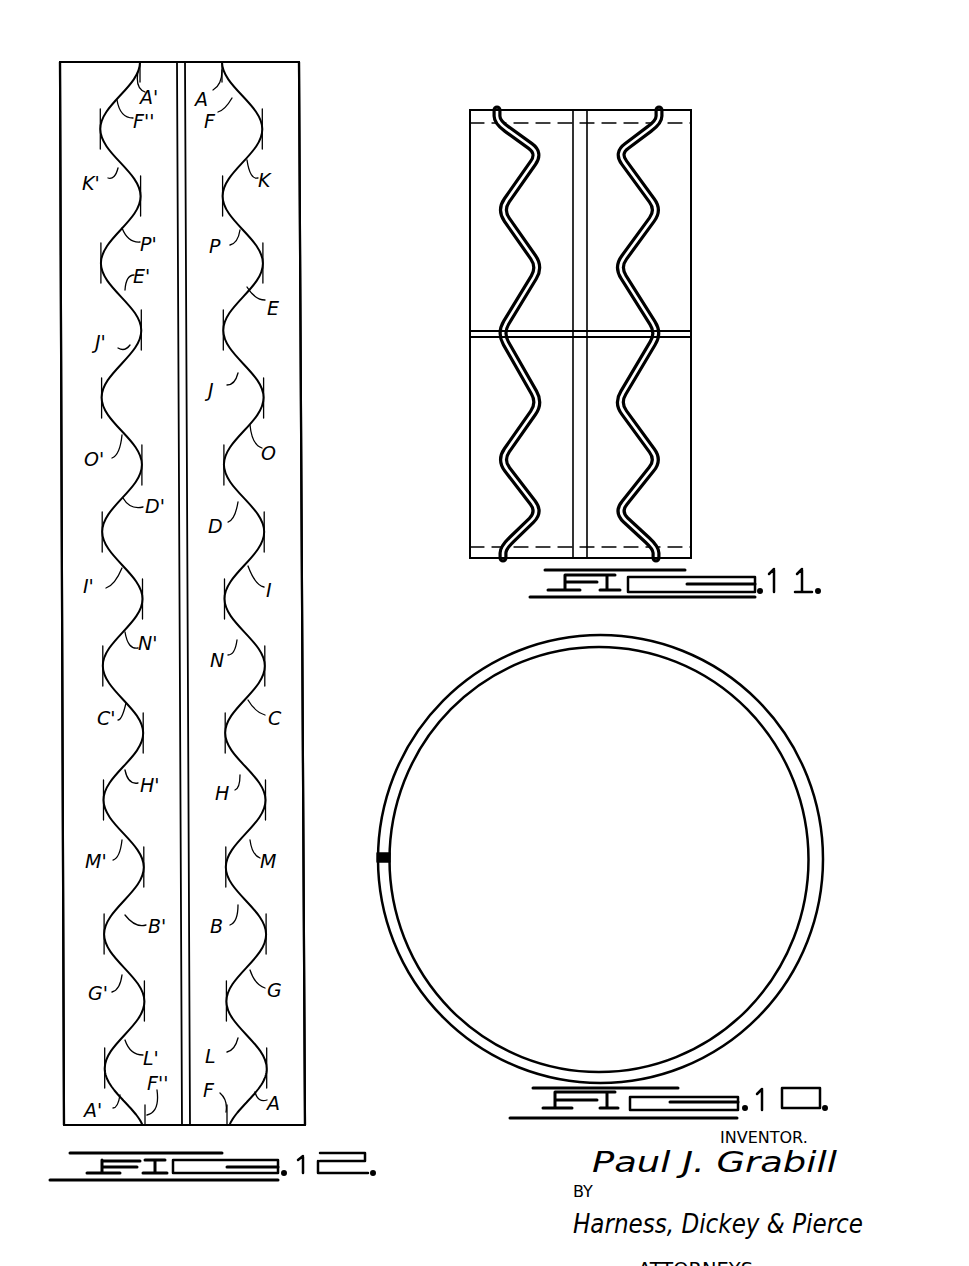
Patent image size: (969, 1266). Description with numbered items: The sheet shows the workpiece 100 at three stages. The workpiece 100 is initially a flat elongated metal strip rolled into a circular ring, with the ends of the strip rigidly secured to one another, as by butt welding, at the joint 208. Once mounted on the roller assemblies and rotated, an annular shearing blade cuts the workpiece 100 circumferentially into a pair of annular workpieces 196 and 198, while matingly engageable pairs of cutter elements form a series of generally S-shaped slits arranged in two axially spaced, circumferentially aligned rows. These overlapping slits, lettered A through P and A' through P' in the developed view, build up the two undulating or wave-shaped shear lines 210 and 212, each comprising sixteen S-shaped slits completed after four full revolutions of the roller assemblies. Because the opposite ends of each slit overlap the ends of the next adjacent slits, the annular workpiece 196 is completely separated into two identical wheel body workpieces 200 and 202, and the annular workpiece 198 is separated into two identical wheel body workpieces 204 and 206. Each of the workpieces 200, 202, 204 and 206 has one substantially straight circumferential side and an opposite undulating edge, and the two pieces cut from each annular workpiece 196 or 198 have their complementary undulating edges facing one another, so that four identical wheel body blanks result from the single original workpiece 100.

In FIG. 12, the workpiece 100 is at (313, 1062).
In FIG. 11, the workpiece 100 is at (695, 457).
In FIG. 10, the workpiece 100 is at (750, 1028).
In FIG. 12, the annular workpiece 196 is at (265, 58).
In FIG. 12, the annular workpiece 198 is at (107, 60).
In FIG. 12, the wheel body workpiece 200 is at (303, 100).
In FIG. 11, the wheel body workpiece 200 is at (692, 137).
In FIG. 12, the wheel body workpiece 202 is at (204, 58).
In FIG. 11, the wheel body workpiece 202 is at (622, 108).
In FIG. 12, the wheel body workpiece 204 is at (57, 106).
In FIG. 11, the wheel body workpiece 204 is at (468, 500).
In FIG. 12, the wheel body workpiece 206 is at (146, 60).
In FIG. 11, the wheel body workpiece 206 is at (533, 560).
In FIG. 11, the butt weld 208 is at (672, 333).
In FIG. 10, the butt weld 208 is at (392, 853).
In FIG. 12, the undulating shear line 210 is at (115, 376).
In FIG. 12, the undulating shear line 212 is at (237, 305).